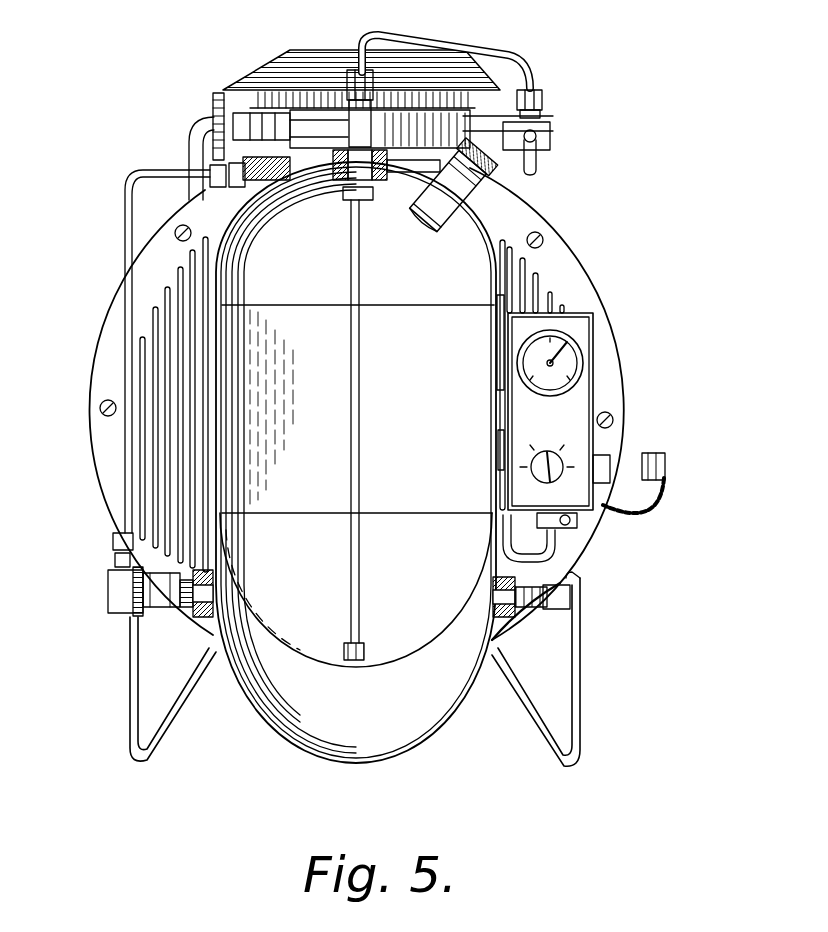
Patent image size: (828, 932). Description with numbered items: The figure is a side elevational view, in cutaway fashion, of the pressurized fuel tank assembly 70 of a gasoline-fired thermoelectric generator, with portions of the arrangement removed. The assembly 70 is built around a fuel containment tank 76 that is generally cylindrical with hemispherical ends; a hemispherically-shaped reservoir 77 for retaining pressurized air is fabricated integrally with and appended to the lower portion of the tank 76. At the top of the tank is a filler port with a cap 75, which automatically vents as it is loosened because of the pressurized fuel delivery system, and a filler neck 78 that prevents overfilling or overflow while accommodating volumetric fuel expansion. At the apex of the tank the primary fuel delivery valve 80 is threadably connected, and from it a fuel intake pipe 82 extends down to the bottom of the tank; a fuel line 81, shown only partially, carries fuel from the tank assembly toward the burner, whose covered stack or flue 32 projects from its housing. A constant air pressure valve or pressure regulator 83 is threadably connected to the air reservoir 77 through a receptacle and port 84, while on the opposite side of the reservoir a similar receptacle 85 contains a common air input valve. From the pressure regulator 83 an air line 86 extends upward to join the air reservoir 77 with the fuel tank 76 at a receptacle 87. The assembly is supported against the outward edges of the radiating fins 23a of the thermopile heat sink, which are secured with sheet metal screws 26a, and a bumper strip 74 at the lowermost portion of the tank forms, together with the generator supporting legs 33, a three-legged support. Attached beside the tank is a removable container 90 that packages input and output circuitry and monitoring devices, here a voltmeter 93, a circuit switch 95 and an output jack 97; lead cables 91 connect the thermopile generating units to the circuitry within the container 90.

The fuel tank assembly 70 is at (562, 221).
The radiating fins 23a is at (160, 299).
The sheet metal screws 26a is at (546, 238).
The covered stack or flue 32 is at (427, 122).
The generator supporting legs 33 is at (128, 703).
The bumper strip 74 is at (418, 745).
The filler port cap 75 is at (497, 190).
The fuel containment tank 76 is at (358, 409).
The reservoir 77 is at (356, 622).
The filler neck 78 is at (443, 226).
The primary fuel delivery valve 80 is at (341, 117).
The fuel line 81 is at (531, 72).
The fuel intake pipe 82 is at (362, 468).
The pressure regulator 83 is at (110, 600).
The receptacle and port 84 is at (207, 613).
The receptacle 85 is at (503, 614).
The air line 86 is at (120, 220).
The receptacle 87 is at (240, 158).
The container 90 is at (602, 326).
The lead cables 91 is at (553, 540).
The voltmeter 93 is at (567, 370).
The circuit switch 95 is at (562, 465).
The output jack 97 is at (666, 459).